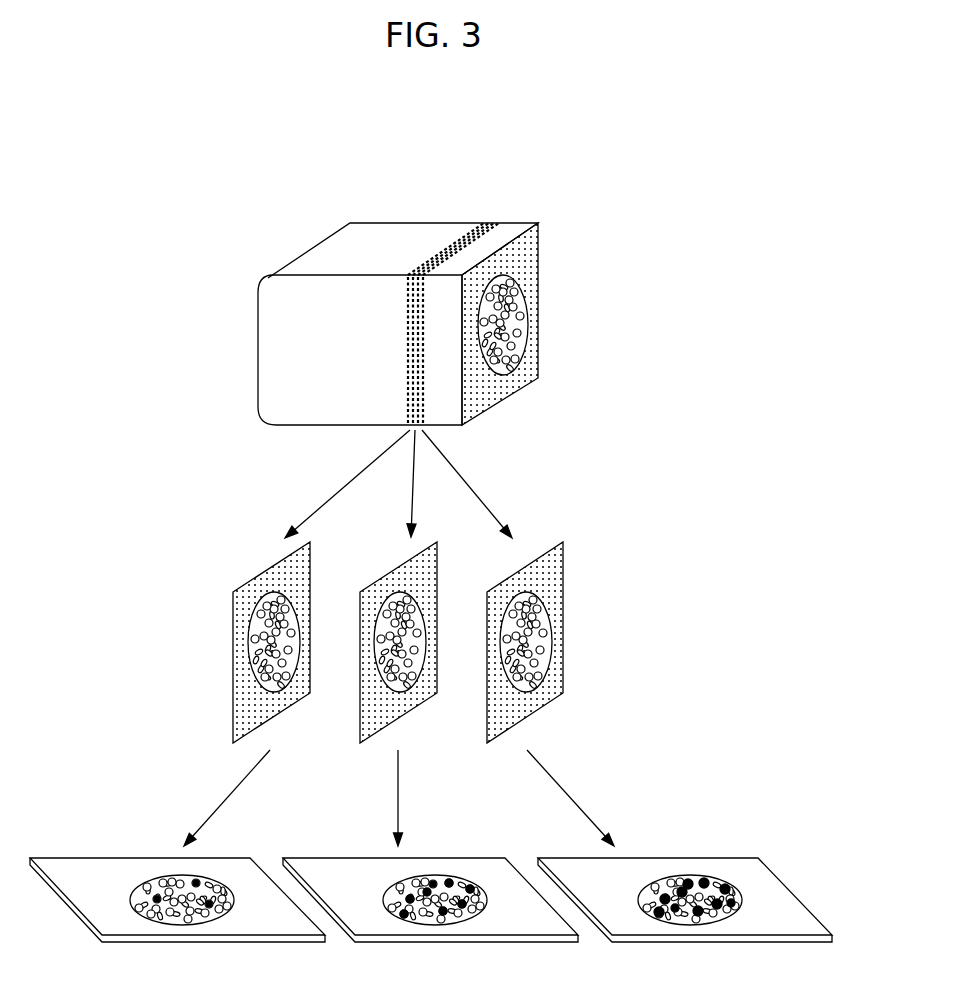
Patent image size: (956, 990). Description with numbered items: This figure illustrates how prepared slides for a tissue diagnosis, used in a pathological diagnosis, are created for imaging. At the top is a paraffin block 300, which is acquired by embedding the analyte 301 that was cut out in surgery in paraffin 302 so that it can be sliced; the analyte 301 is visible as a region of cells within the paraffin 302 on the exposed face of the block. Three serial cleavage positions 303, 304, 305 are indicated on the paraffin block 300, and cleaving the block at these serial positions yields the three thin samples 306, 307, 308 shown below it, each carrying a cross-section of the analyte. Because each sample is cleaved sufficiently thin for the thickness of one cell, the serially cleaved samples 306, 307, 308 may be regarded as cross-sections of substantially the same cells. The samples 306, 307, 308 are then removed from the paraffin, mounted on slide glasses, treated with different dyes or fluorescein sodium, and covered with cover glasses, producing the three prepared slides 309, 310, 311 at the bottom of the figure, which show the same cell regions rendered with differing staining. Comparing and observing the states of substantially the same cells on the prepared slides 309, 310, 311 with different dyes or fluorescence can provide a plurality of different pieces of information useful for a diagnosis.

The paraffin block 300 is at (425, 280).
The analyte 301 is at (517, 313).
The paraffin 302 is at (533, 258).
The cleavage position 303 is at (510, 198).
The cleavage position 304 is at (490, 197).
The cleavage position 305 is at (475, 198).
The sample 306 is at (566, 567).
The sample 307 is at (439, 567).
The sample 308 is at (312, 567).
The prepared slide 309 is at (745, 870).
The prepared slide 310 is at (487, 870).
The prepared slide 311 is at (100, 870).